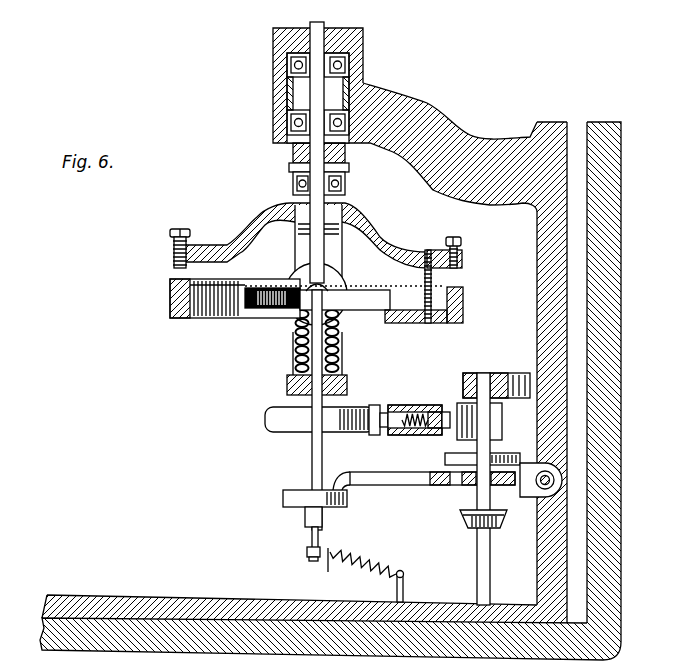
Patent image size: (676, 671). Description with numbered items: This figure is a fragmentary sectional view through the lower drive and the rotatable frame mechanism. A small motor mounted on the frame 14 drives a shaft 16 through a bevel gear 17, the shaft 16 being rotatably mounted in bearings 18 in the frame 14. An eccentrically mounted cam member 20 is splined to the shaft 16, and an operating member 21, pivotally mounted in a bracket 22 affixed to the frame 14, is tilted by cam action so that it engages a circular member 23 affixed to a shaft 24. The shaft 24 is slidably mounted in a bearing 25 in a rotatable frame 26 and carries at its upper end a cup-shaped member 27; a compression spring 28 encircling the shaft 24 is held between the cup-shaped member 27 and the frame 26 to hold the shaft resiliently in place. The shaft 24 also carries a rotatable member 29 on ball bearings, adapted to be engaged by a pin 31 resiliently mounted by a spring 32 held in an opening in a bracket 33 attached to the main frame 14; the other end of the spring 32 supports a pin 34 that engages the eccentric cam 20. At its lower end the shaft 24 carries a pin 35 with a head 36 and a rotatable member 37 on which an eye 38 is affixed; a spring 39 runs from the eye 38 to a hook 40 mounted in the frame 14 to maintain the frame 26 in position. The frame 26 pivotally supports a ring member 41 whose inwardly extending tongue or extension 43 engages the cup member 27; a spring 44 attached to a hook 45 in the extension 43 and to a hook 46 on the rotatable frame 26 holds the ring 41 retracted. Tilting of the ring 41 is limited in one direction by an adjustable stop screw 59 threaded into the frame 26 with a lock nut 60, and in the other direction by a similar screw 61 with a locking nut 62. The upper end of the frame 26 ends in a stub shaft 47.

The frame 14 is at (555, 410).
The shaft 16 is at (476, 497).
The bevel gear 17 is at (465, 522).
The bearings 18 is at (488, 374).
The cam member 20 is at (495, 425).
The operating member 21 is at (407, 483).
The bracket 22 is at (528, 462).
The circular member 23 is at (335, 507).
The shaft 24 is at (305, 462).
The bearing 25 is at (345, 402).
The rotatable frame 26 is at (366, 214).
The cup-shaped member 27 is at (348, 290).
The compression spring 28 is at (348, 368).
The rotatable member 29 is at (265, 418).
The pin 31 is at (385, 410).
The spring 32 is at (418, 406).
The bracket 33 is at (412, 406).
The pin 34 is at (440, 410).
The pin 35 is at (310, 533).
The head 36 is at (308, 558).
The rotatable member 37 is at (307, 548).
The eye 38 is at (327, 560).
The spring 39 is at (365, 563).
The hook 40 is at (403, 585).
The ring member 41 is at (463, 303).
The tongue or extension 43 is at (408, 323).
The spring 44 is at (425, 278).
The hook 45 is at (440, 323).
The hook 46 is at (432, 250).
The stub shaft 47 is at (340, 192).
The screw 59 is at (458, 240).
The lock nut 60 is at (462, 253).
The screw 61 is at (178, 230).
The locking nut 62 is at (174, 243).